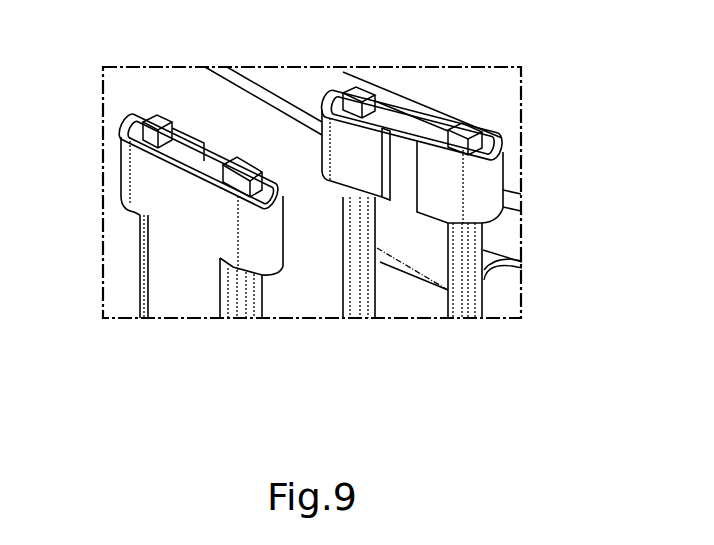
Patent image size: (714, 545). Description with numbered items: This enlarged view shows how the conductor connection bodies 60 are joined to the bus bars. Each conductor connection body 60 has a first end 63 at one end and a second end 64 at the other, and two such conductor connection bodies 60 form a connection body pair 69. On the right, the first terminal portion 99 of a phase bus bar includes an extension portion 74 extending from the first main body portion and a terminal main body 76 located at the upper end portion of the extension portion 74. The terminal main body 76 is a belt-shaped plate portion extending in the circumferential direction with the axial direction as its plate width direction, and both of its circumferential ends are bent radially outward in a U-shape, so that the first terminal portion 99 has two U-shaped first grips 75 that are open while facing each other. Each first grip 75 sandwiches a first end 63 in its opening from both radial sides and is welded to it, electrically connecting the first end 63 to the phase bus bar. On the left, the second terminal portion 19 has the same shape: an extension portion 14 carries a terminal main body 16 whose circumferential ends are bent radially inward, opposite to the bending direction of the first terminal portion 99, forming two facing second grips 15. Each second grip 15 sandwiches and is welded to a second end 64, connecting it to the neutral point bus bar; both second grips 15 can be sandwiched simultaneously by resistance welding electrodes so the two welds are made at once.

The extension portion 14 is at (168, 255).
The second grip 15 is at (132, 122).
The terminal main body 16 is at (123, 157).
The second terminal portion 19 is at (110, 174).
The conductor connection body 60 is at (133, 307).
The first end 63 is at (361, 93).
The second end 64 is at (162, 122).
The connection body pair 69 is at (255, 393).
The extension portion 74 is at (428, 238).
The first grip 75 is at (329, 93).
The terminal main body 76 is at (418, 113).
The first terminal portion 99 is at (516, 168).